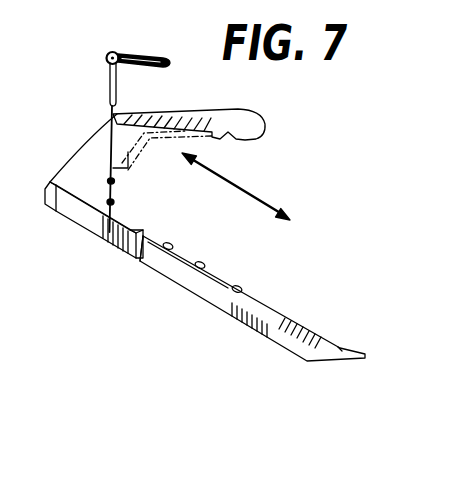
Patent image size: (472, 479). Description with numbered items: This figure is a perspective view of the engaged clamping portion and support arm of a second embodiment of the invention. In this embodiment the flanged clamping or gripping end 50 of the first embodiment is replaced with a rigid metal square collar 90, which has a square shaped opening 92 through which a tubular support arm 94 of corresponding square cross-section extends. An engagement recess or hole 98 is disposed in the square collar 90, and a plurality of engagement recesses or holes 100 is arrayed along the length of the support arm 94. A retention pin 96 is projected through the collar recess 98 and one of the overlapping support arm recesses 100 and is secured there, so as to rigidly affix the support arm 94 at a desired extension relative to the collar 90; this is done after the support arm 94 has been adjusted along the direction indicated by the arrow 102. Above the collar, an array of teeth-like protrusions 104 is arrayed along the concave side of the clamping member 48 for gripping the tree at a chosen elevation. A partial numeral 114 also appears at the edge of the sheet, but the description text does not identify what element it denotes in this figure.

The clamping member 48 is at (99, 151).
The flanged clamping or gripping end 50 is at (92, 188).
The square collar 90 is at (88, 226).
The square shaped opening 92 is at (148, 235).
The tubular support arm 94 is at (326, 342).
The retention pin 96 is at (110, 76).
The engagement recess or hole 98 is at (112, 234).
The engagement recesses or holes 100 is at (195, 269).
The arrow 102 is at (272, 208).
The teeth-like protrusions 104 is at (237, 144).
The adjacent figure element (partial) 114 is at (461, 180).